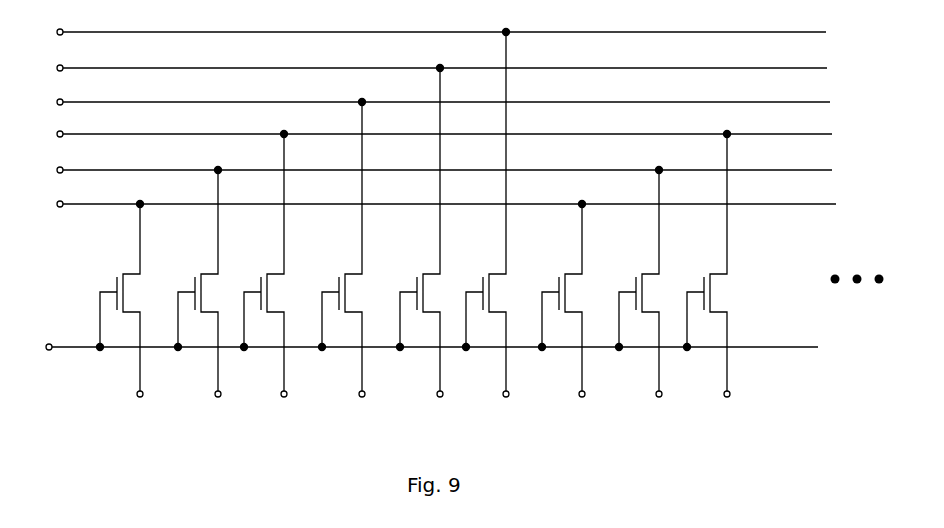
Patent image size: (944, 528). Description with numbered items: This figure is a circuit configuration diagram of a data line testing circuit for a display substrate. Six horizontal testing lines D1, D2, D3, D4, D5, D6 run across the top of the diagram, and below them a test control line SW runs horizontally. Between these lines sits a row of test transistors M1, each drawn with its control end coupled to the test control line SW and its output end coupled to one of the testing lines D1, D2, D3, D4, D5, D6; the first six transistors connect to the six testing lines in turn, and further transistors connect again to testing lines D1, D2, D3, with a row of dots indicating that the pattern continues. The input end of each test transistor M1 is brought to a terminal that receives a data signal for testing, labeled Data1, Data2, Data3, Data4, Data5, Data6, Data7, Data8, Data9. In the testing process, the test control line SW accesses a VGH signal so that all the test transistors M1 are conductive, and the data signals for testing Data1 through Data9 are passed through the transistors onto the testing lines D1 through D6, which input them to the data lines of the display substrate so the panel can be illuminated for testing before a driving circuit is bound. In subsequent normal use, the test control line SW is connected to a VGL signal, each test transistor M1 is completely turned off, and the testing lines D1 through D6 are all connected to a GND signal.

The testing line D1 is at (433, 204).
The testing line D2 is at (431, 170).
The testing line D3 is at (431, 134).
The testing line D4 is at (430, 102).
The testing line D5 is at (429, 68).
The testing line D6 is at (428, 32).
The test control line SW is at (430, 335).
The test transistor M1 is at (421, 237).
The data signal for testing Data1 is at (127, 323).
The data signal for testing Data2 is at (205, 306).
The data signal for testing Data3 is at (271, 288).
The data signal for testing Data4 is at (349, 272).
The data signal for testing Data5 is at (427, 255).
The data signal for testing Data6 is at (493, 237).
The data signal for testing Data7 is at (569, 323).
The data signal for testing Data8 is at (646, 306).
The data signal for testing Data9 is at (714, 288).